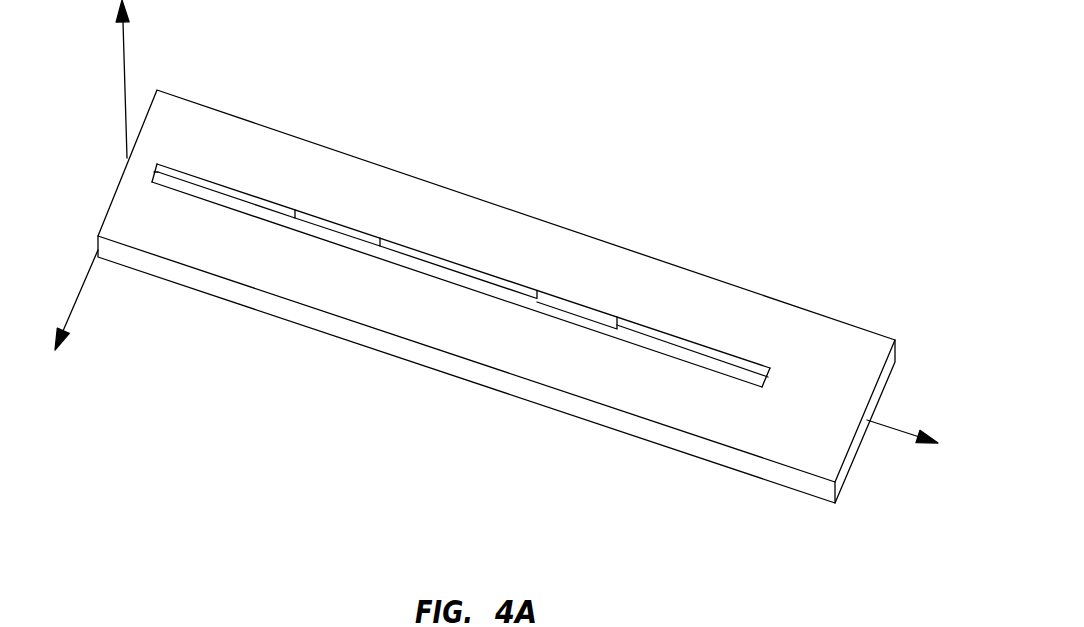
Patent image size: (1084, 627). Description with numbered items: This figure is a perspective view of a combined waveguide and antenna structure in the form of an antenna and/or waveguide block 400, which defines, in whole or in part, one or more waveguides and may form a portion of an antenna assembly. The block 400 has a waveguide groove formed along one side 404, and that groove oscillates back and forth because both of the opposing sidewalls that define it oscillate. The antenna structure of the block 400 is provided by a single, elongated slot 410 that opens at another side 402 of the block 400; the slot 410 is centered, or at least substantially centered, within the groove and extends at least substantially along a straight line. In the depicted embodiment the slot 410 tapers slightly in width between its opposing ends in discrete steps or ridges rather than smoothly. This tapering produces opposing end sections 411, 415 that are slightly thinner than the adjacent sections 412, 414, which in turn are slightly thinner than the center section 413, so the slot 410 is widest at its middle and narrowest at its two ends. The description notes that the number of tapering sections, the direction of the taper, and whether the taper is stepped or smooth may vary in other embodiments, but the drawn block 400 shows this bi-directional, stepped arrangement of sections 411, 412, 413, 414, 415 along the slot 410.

The waveguide block 400 is at (732, 162).
The side 402 is at (787, 327).
The side 404 is at (722, 465).
The slot 410 is at (443, 258).
The end section 411 is at (222, 190).
The adjacent section 412 is at (325, 222).
The center section 413 is at (468, 285).
The adjacent section 414 is at (572, 307).
The end section 415 is at (682, 342).